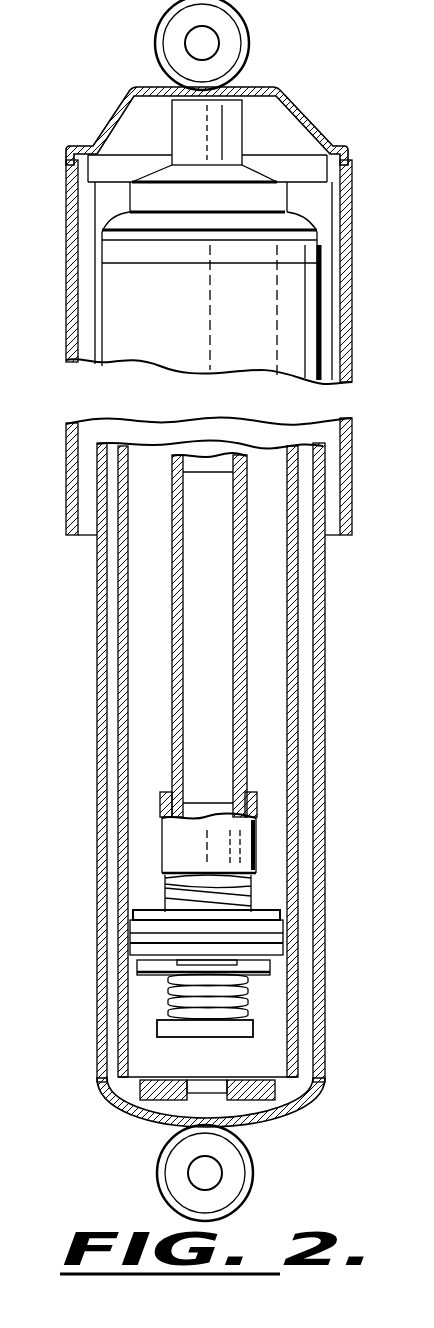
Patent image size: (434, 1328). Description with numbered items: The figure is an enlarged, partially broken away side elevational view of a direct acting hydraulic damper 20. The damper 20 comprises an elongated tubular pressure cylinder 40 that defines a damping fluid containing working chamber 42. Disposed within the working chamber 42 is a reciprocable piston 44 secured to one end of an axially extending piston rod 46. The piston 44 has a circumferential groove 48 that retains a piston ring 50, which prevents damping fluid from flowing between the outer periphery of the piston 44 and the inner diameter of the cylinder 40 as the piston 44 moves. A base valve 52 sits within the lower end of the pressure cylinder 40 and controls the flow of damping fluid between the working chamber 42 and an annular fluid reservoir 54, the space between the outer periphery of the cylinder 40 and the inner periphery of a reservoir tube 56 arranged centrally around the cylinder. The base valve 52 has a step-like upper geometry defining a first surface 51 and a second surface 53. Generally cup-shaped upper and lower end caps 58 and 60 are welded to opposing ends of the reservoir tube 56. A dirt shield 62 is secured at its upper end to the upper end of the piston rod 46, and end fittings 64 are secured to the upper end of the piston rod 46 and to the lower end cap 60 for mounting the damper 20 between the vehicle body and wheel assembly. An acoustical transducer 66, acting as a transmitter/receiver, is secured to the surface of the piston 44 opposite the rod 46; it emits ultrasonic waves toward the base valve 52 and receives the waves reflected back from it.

The damper 20 is at (338, 119).
The pressure cylinder 40 is at (295, 612).
The working chamber 42 is at (267, 653).
The piston 44 is at (307, 918).
The piston rod 46 is at (198, 657).
The circumferential groove 48 is at (143, 935).
The piston ring 50 is at (277, 943).
The first surface 51 is at (222, 1077).
The base valve 52 is at (242, 1071).
The second surface 53 is at (193, 1077).
The annular fluid reservoir 54 is at (307, 771).
The reservoir tube 56 is at (325, 582).
The upper end cap 58 is at (337, 153).
The lower end cap 60 is at (293, 1110).
The dirt shield 62 is at (353, 300).
The end fittings 64 is at (247, 37).
The acoustical transducer 66 is at (163, 1027).